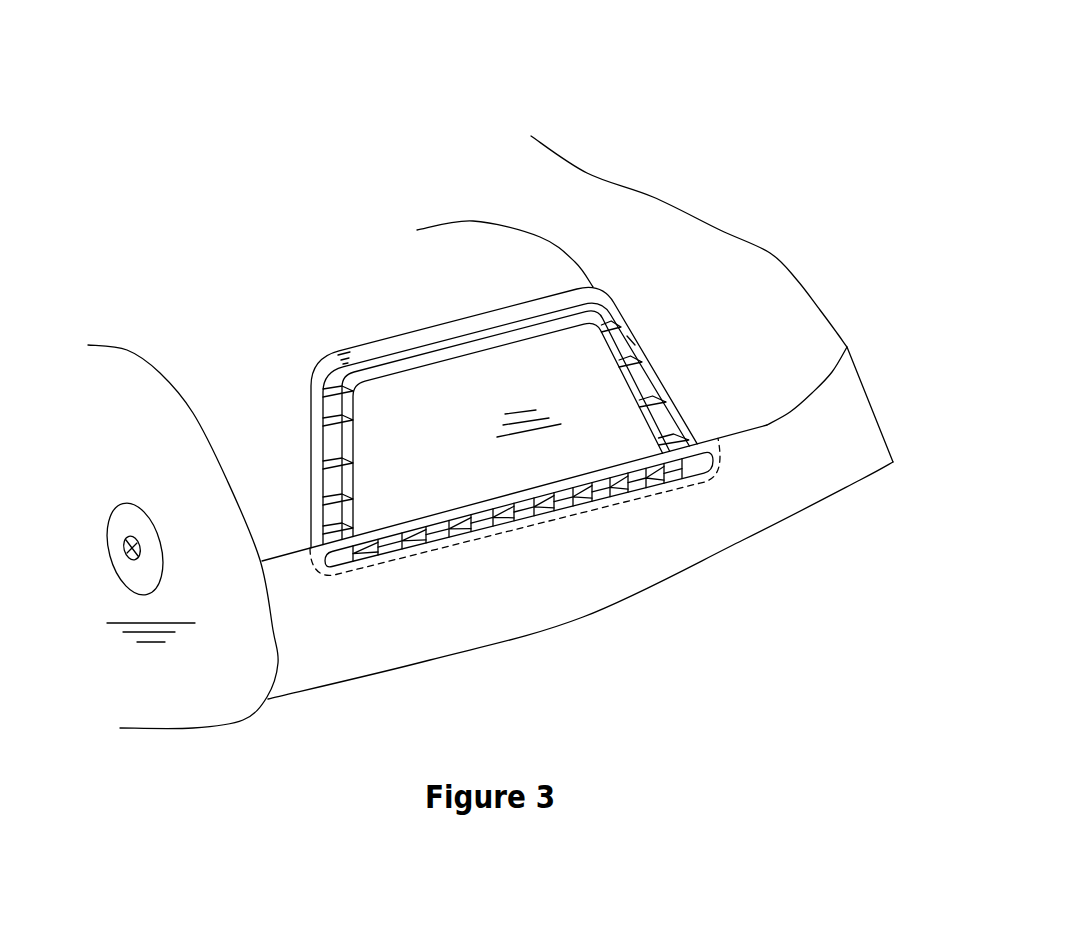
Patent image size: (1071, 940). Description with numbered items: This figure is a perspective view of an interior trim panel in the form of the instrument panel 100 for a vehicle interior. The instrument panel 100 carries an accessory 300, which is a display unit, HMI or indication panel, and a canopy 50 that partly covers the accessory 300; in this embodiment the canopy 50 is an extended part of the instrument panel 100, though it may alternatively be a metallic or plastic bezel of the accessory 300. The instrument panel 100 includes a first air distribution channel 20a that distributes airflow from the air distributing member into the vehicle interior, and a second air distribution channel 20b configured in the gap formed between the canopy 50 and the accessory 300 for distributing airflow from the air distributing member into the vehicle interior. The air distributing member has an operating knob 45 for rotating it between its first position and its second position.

The instrument panel 100 is at (793, 207).
The accessory 300 is at (520, 410).
The canopy 50 is at (347, 352).
The second air distribution channel 20b is at (342, 413).
The first air distribution channel 20a is at (430, 535).
The operating knob 45 is at (133, 543).